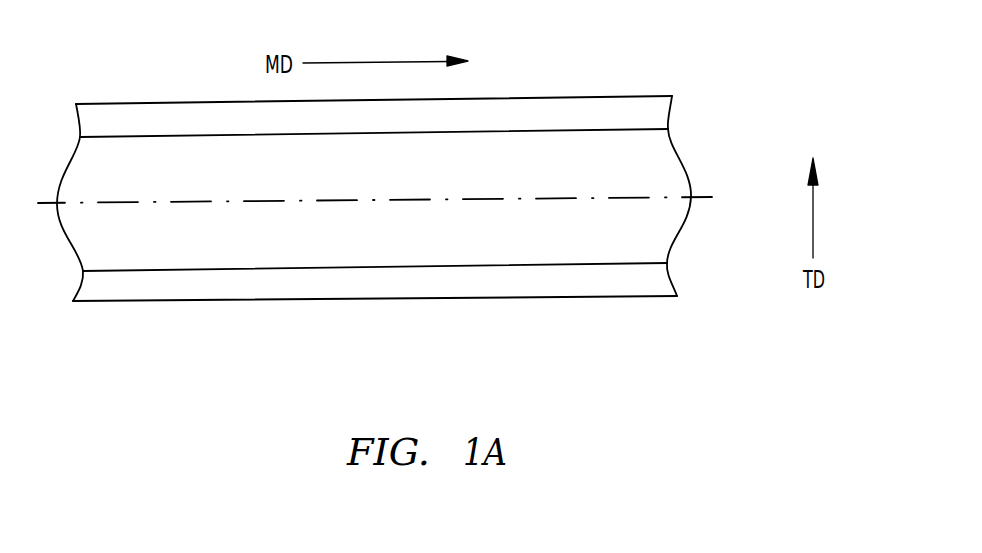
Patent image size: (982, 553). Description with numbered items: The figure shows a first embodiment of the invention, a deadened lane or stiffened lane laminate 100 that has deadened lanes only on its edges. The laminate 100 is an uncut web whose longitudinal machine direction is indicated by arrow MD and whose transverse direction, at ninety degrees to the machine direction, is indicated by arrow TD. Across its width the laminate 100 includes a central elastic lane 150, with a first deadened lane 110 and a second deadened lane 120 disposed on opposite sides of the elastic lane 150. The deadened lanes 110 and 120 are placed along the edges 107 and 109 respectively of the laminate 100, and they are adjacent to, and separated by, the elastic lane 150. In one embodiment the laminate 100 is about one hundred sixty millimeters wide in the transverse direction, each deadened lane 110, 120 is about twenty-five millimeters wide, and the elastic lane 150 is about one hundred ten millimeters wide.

The deadened lane laminate 100 is at (401, 176).
The edge 107 is at (450, 297).
The edge 109 is at (507, 99).
The first deadened lane 110 is at (419, 306).
The second deadened lane 120 is at (419, 93).
The elastic lane 150 is at (670, 232).